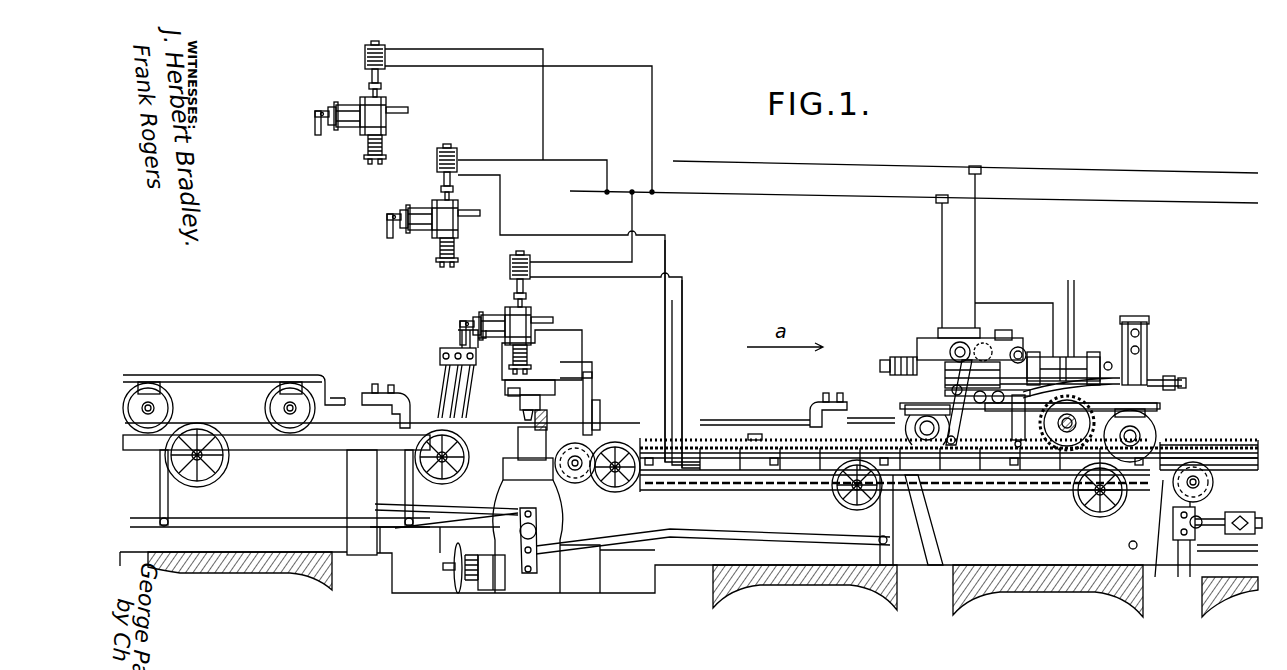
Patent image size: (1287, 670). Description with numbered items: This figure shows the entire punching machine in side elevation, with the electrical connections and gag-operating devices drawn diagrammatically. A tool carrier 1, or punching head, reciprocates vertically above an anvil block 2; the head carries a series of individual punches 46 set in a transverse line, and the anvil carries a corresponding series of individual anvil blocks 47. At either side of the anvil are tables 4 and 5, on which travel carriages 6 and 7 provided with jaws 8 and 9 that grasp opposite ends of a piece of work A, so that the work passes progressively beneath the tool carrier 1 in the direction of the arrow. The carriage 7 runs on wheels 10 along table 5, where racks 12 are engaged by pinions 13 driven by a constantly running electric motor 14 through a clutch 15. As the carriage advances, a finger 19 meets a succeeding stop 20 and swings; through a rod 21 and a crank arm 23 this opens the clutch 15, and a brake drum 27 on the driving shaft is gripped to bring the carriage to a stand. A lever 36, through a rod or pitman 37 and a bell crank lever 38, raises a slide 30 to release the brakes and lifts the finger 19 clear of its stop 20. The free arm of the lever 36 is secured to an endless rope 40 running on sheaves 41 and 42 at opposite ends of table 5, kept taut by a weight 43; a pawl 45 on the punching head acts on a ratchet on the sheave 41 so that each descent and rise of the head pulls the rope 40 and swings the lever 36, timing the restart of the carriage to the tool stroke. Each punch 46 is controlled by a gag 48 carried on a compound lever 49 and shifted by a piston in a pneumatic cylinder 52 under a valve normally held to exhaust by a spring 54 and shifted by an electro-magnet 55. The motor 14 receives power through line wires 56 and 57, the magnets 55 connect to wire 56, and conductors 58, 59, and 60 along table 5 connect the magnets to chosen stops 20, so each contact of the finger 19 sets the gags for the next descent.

The tool carrier 1 is at (566, 352).
The anvil block 2 is at (532, 447).
The table 4 is at (278, 450).
The table 5 is at (705, 440).
The carriage 6 is at (233, 375).
The carriage 7 is at (1160, 407).
The jaws 8 is at (412, 415).
The jaws 9 is at (790, 433).
The wheels 10 is at (1160, 435).
The racks 12 is at (1240, 448).
The pinions 13 is at (1065, 445).
The motor 14 is at (925, 338).
The clutch 15 is at (1010, 330).
The finger 19 is at (1012, 425).
The stop 20 is at (1170, 456).
The rod 21 is at (1053, 320).
The crank arm 23 is at (977, 372).
The drum 27 is at (1148, 360).
The slide 30 is at (1150, 376).
The lever 36 is at (908, 412).
The rod or pitman 37 is at (1075, 330).
The bell crank lever 38 is at (1115, 352).
The endless rope 40 is at (700, 438).
The sheave 41 is at (577, 483).
The sheave 42 is at (1213, 490).
The weight 43 is at (1237, 525).
The pawl 45 is at (598, 425).
The punches 46 is at (522, 415).
The anvil blocks 47 is at (533, 428).
The gag 48 is at (512, 394).
The compound lever 49 is at (314, 133).
The pneumatic cylinder 52 is at (358, 100).
The spring 54 is at (384, 152).
The electro-magnet 55 is at (365, 56).
The line wire 56 is at (1205, 202).
The line wire 57 is at (1205, 170).
The conductor 58 is at (685, 310).
The conductor 59 is at (682, 343).
The conductor 60 is at (664, 302).
The piece of work A is at (752, 434).